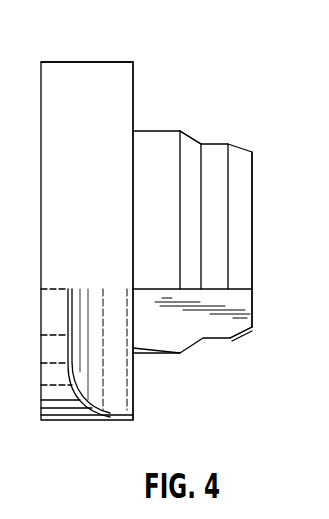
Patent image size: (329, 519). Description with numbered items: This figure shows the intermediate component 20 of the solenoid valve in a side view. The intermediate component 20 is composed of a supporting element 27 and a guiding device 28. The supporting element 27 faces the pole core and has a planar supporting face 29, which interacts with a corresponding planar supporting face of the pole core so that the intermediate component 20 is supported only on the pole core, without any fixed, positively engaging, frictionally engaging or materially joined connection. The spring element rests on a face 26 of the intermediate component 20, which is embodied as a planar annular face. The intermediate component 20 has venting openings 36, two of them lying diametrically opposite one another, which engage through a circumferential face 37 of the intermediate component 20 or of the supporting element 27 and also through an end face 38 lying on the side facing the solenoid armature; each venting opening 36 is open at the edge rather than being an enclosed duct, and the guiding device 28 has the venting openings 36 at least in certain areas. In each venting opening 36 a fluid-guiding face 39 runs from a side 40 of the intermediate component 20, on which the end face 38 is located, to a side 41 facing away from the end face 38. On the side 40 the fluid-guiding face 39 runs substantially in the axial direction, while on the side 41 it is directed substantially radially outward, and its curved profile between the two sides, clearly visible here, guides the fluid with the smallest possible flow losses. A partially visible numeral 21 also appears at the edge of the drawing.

The intermediate component 20 is at (228, 110).
The component 21 is at (4, 103).
The face 26 is at (135, 95).
The supporting element 27 is at (106, 85).
The guiding device 28 is at (188, 148).
The supporting face 29 is at (41, 367).
The venting opening 36 is at (173, 323).
The circumferential face 37 is at (71, 62).
The end face 38 is at (254, 170).
The fluid-guiding face 39 is at (95, 382).
The side 40 is at (238, 343).
The side 41 is at (65, 428).